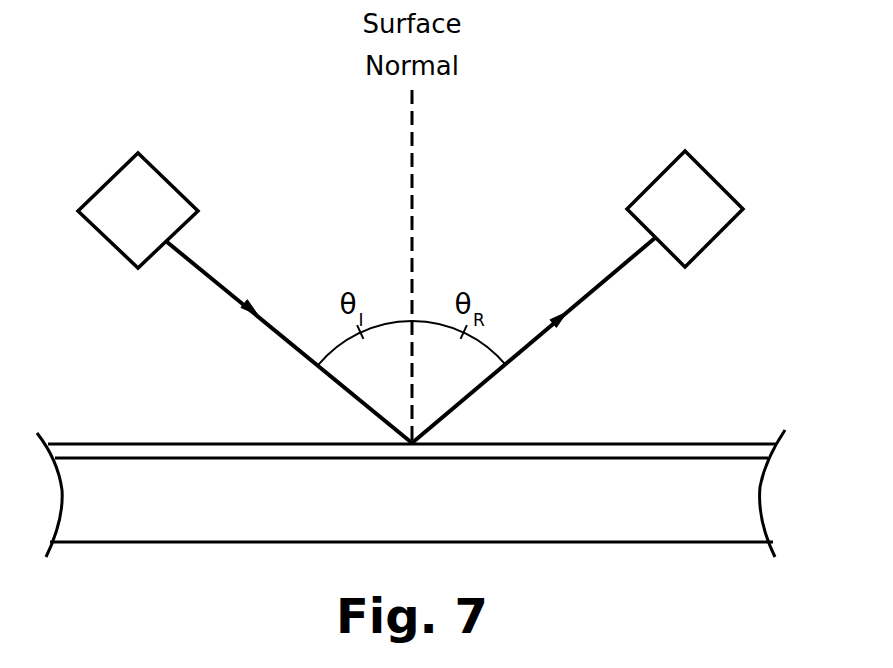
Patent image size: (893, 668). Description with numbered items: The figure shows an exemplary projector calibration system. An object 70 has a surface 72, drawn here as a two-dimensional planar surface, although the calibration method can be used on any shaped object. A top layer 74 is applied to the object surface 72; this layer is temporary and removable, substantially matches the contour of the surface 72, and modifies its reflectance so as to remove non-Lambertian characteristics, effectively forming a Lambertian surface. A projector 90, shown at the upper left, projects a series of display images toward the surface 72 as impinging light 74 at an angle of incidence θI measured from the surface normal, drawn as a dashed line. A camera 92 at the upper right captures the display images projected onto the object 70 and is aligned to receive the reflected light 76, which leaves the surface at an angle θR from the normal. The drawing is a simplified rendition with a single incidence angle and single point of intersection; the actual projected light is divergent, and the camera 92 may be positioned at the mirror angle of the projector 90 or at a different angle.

The object 70 is at (411, 493).
The surface 72 is at (703, 460).
The top layer 74 is at (207, 275).
The reflected light 76 is at (618, 275).
The projector 90 is at (110, 180).
The camera 92 is at (715, 177).